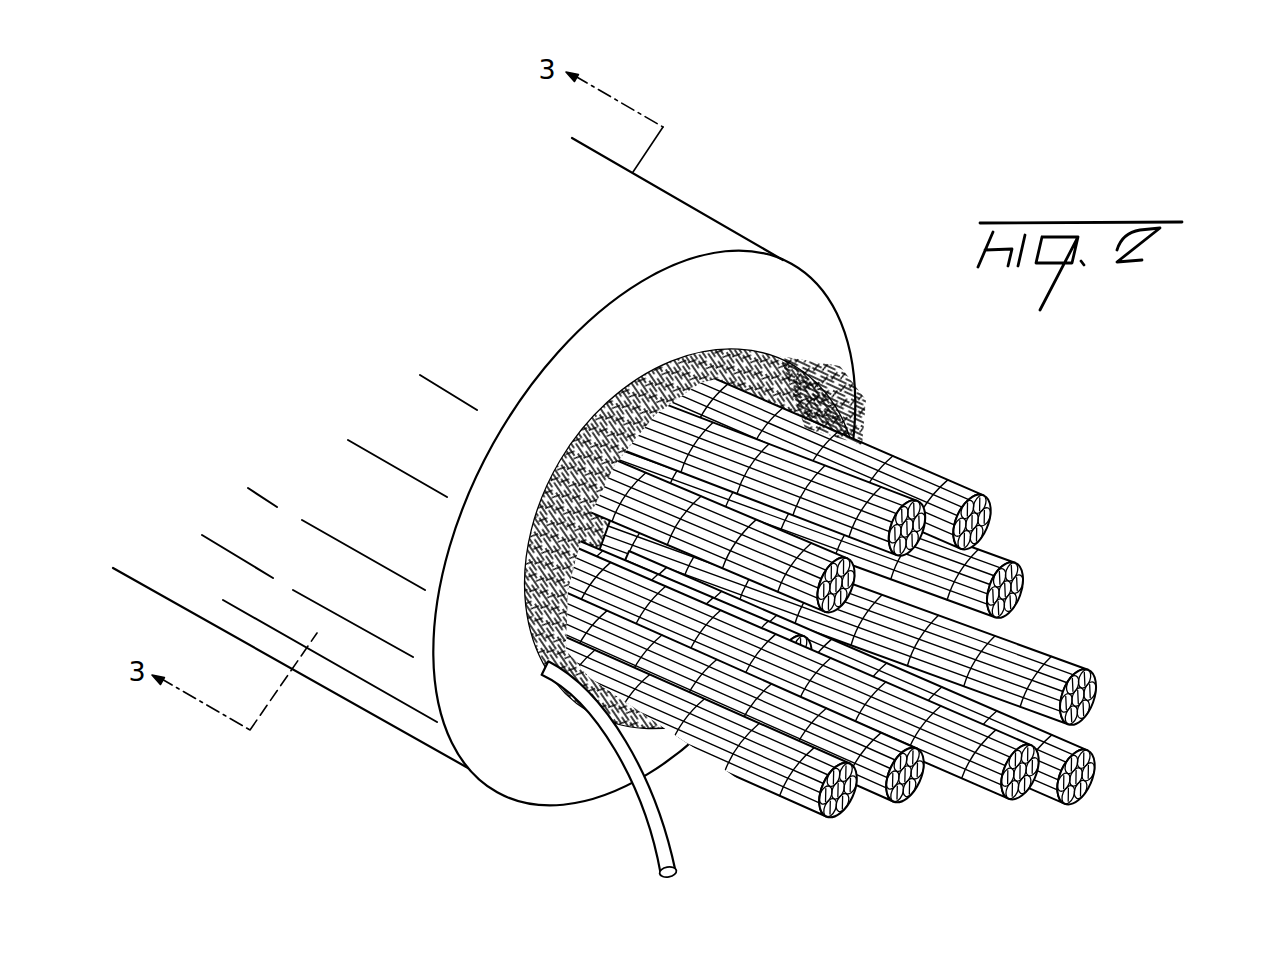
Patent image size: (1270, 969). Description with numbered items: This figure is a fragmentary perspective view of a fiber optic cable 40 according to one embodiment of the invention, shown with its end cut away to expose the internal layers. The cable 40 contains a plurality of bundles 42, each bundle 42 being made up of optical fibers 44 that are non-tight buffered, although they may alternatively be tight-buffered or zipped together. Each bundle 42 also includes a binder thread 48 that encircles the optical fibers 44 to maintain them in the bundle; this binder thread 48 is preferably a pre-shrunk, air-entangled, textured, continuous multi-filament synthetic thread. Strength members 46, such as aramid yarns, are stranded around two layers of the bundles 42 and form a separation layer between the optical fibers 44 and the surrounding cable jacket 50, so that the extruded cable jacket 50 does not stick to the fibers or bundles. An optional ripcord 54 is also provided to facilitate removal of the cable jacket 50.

The fiber optic cable 40 is at (743, 218).
The cable jacket 50 is at (795, 313).
The strength members 46 is at (715, 450).
The bundle 42 is at (780, 588).
The optical fibers 44 is at (1022, 563).
The binder thread 48 is at (714, 428).
The ripcord 54 is at (657, 831).